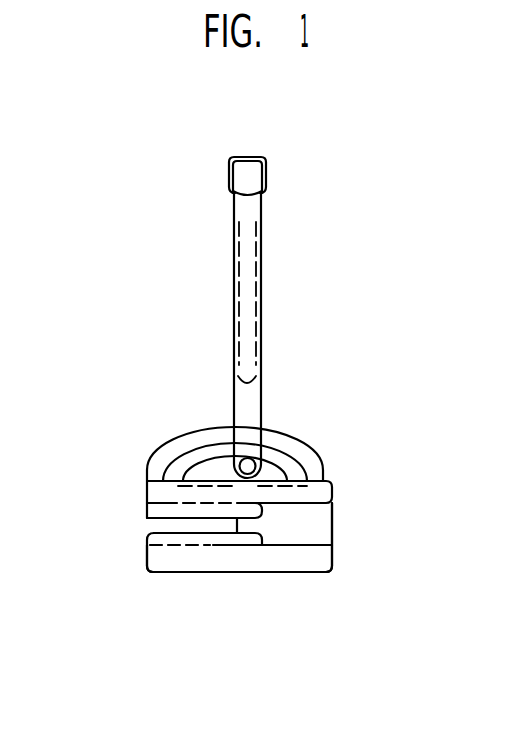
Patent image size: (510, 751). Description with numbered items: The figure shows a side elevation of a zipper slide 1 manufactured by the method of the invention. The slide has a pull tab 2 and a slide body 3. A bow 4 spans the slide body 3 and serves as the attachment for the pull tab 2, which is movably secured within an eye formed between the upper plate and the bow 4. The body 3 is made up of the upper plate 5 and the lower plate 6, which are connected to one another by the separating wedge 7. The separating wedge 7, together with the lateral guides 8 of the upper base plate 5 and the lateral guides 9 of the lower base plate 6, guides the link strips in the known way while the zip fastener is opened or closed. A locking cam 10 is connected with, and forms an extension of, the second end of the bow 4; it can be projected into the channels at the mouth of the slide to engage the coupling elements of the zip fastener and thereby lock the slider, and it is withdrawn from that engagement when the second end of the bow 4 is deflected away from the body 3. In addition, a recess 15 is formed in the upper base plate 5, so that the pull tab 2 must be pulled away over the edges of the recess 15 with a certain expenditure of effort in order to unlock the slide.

The zipper slide 1 is at (279, 374).
The pull tab 2 is at (242, 203).
The slide body 3 is at (333, 488).
The bow 4 is at (300, 448).
The upper plate 5 is at (150, 486).
The lower plate 6 is at (198, 560).
The separating wedge 7 is at (284, 525).
The lateral guide 8 is at (162, 507).
The lateral guide 9 is at (160, 547).
The locking cam 10 is at (147, 520).
The recess 15 is at (230, 471).